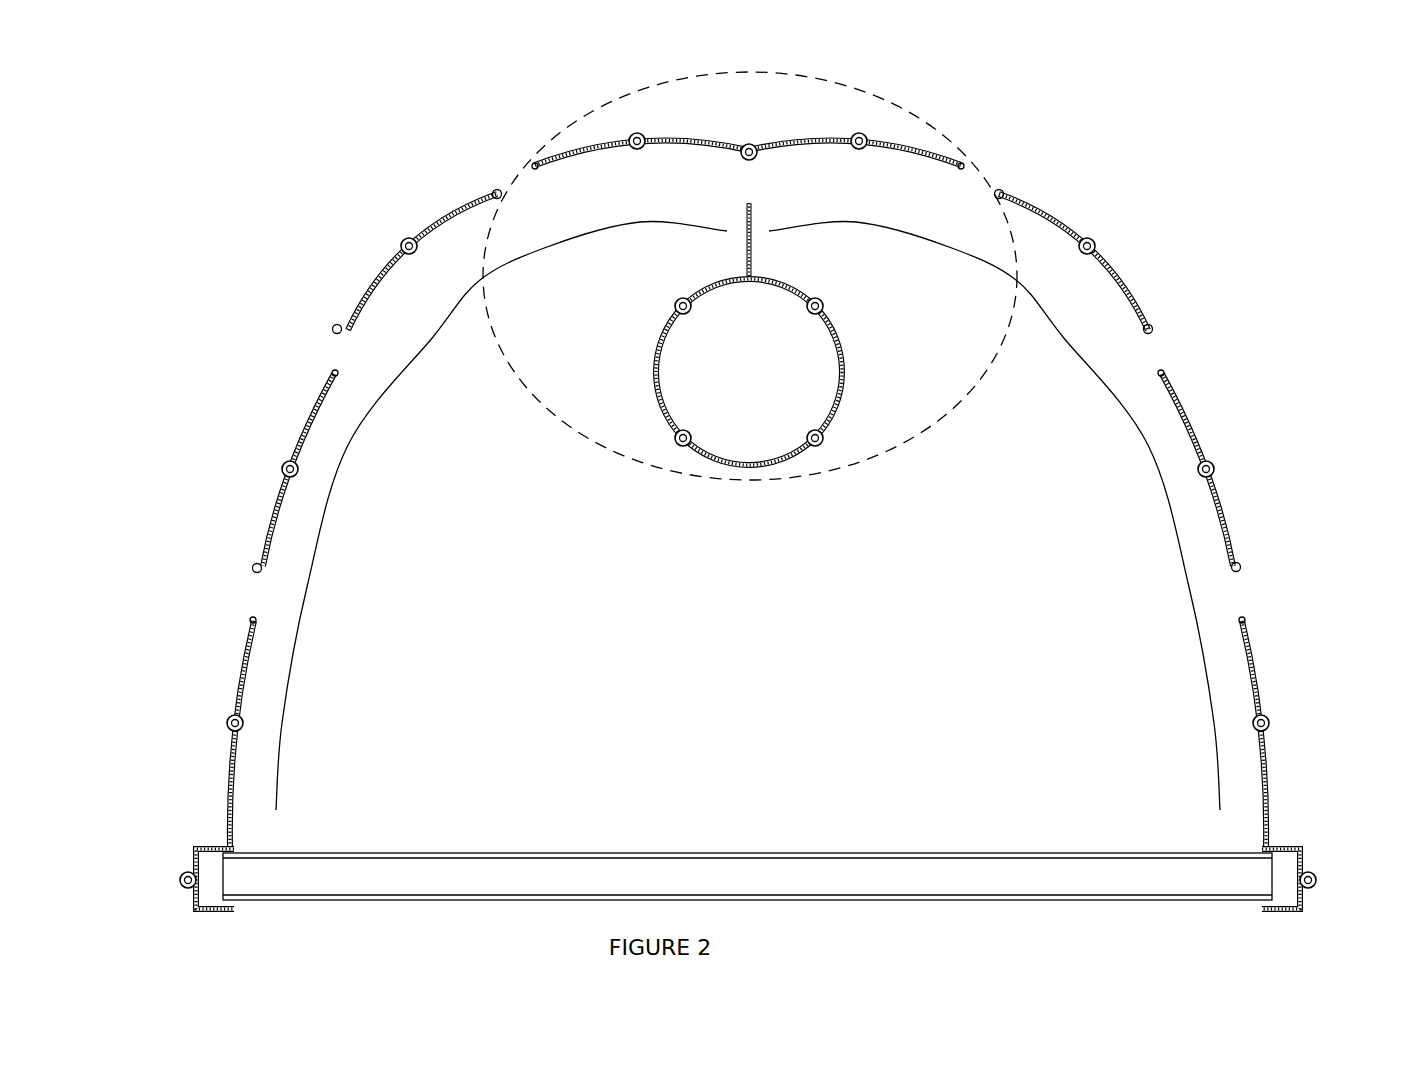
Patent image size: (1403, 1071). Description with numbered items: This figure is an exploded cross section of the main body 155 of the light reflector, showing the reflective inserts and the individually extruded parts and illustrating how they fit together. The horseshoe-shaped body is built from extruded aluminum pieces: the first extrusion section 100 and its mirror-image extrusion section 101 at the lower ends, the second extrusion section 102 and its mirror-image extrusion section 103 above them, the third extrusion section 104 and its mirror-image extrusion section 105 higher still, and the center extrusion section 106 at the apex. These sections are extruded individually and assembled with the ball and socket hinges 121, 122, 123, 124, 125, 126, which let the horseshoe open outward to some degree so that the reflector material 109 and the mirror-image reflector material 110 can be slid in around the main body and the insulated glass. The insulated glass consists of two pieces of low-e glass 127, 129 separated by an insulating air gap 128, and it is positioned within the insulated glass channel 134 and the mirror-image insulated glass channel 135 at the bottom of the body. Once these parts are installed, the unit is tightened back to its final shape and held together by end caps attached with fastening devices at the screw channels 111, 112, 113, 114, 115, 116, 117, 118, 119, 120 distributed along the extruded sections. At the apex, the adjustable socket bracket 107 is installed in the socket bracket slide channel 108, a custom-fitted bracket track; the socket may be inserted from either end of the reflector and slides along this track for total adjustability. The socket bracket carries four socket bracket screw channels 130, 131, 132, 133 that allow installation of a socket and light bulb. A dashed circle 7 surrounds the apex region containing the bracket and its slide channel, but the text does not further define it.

The reference circle 7 is at (632, 465).
The extrusion section 1 100 is at (243, 667).
The extrusion section 1 mirror 101 is at (1255, 662).
The extrusion section 2 102 is at (307, 435).
The extrusion section 2 mirror 103 is at (1190, 422).
The extrusion section 3 104 is at (373, 288).
The extrusion section 3 mirror 105 is at (1117, 275).
The center extrusion section 106 is at (698, 141).
The adjustable socket bracket 107 is at (653, 377).
The socket bracket slide channel 108 is at (750, 207).
The reflector material 109 is at (280, 783).
The reflector material mirror 110 is at (1218, 803).
The screw channel 111 is at (185, 878).
The screw channel 112 is at (1312, 878).
The screw channel 113 is at (238, 723).
The screw channel 114 is at (1257, 722).
The screw channel 115 is at (293, 470).
The screw channel 116 is at (1203, 470).
The screw channel 117 is at (413, 248).
The screw channel 118 is at (1085, 250).
The screw channel 119 is at (636, 145).
The screw channel 120 is at (860, 145).
The ball and socket hinge 121 is at (252, 620).
The ball and socket hinge 122 is at (1247, 618).
The ball and socket hinge 123 is at (333, 375).
The ball and socket hinge 124 is at (1163, 372).
The ball and socket hinge 125 is at (533, 160).
The ball and socket hinge 126 is at (965, 163).
The glass 127 is at (888, 852).
The insulating air gap 128 is at (747, 876).
The glass 129 is at (862, 900).
The socket bracket screw channel 130 is at (692, 307).
The socket bracket screw channel 131 is at (808, 310).
The socket bracket screw channel 132 is at (692, 434).
The socket bracket screw channel 133 is at (812, 433).
The insulated glass channel 134 is at (220, 849).
The insulated glass channel mirror 135 is at (1295, 910).
The main body 155 is at (1124, 198).